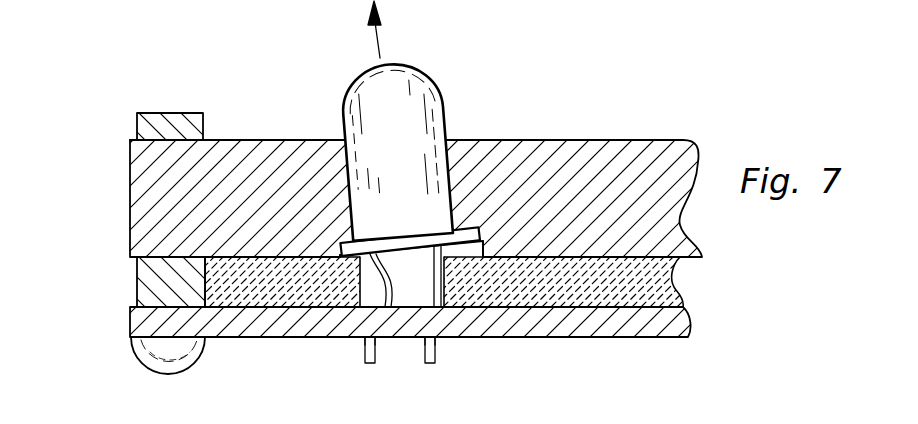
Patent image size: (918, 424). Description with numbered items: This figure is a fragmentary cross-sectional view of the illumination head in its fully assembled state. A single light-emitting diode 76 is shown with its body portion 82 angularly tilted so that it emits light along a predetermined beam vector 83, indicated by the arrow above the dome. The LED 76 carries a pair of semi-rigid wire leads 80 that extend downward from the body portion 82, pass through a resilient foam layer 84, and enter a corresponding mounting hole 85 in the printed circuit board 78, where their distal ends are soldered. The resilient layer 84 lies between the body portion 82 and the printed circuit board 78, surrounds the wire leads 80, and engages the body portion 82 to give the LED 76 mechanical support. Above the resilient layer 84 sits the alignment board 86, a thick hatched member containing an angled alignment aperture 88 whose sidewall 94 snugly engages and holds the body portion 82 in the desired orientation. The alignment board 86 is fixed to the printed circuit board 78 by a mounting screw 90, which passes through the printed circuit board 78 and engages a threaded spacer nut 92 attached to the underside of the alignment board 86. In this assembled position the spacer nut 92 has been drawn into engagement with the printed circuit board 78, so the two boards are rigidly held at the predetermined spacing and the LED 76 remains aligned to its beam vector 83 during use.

The light-emitting diode 76 is at (468, 240).
The printed circuit board 78 is at (130, 323).
The semi-rigid wire leads 80 is at (372, 365).
The body portion 82 is at (350, 80).
The beam vector 83 is at (379, 40).
The resilient foam layer 84 is at (685, 300).
The mounting hole 85 is at (365, 340).
The alignment board 86 is at (584, 147).
The alignment aperture 88 is at (407, 138).
The mounting screw 90 is at (150, 372).
The threaded spacer nut 92 is at (157, 222).
The sidewall 94 is at (333, 152).